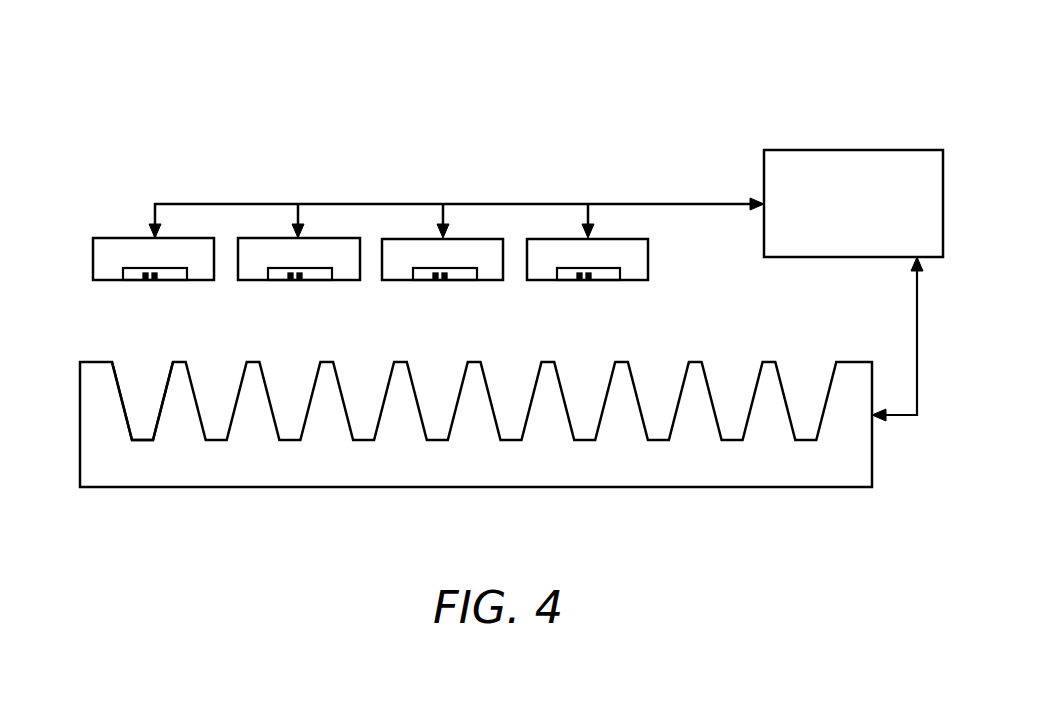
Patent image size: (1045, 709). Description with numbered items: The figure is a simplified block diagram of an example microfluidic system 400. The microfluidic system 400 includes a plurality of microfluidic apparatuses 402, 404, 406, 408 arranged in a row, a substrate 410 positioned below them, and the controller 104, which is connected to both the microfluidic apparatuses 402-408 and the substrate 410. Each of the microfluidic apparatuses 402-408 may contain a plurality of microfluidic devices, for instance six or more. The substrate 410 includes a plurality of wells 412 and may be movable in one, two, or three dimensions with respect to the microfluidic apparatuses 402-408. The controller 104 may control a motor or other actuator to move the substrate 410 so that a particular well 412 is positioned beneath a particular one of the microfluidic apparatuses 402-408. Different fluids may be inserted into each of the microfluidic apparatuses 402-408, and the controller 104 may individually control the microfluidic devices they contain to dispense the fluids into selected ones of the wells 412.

The microfluidic system 400 is at (270, 145).
The microfluidic apparatus 402 is at (122, 237).
The microfluidic apparatus 404 is at (261, 238).
The microfluidic apparatus 406 is at (463, 239).
The microfluidic apparatus 408 is at (620, 239).
The controller 104 is at (872, 229).
The substrate 410 is at (120, 487).
The well 412 is at (145, 375).